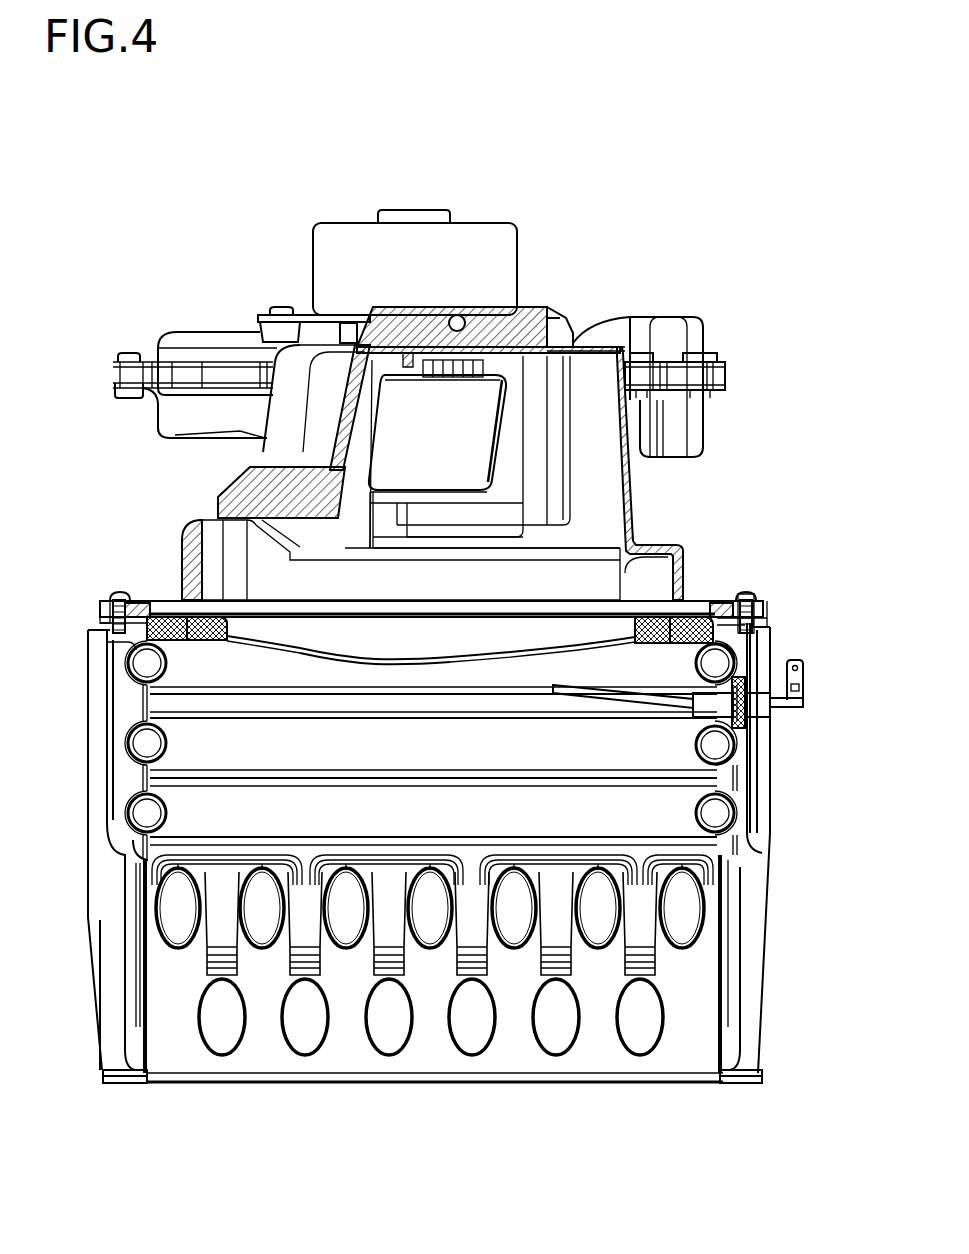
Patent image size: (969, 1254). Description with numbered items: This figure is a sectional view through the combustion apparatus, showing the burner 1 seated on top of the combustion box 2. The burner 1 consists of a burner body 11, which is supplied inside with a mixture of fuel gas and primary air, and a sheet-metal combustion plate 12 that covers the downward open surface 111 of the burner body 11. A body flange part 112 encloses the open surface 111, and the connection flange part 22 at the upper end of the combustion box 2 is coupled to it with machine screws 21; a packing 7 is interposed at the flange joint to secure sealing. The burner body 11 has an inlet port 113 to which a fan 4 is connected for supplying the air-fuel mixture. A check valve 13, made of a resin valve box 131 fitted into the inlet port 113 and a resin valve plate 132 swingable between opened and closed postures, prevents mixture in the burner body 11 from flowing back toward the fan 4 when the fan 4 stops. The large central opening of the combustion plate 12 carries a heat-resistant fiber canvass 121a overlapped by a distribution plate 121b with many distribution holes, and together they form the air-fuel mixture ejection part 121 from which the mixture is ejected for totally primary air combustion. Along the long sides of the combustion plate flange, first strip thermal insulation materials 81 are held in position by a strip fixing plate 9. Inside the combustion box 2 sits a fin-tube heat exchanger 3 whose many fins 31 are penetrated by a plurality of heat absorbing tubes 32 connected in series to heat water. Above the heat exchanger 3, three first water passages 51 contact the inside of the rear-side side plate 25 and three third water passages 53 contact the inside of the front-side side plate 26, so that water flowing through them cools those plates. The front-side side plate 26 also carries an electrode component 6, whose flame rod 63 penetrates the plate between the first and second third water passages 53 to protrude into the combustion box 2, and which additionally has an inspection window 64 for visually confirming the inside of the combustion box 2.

The burner 1 is at (455, 474).
The combustion box 2 is at (447, 850).
The heat exchanger 3 is at (432, 934).
The fan 4 is at (603, 322).
The first water passages 51 is at (168, 743).
The third water passages 53 is at (694, 745).
The electrode component 6 is at (781, 724).
The packing 7 is at (740, 605).
The first strip thermal insulation materials 81 is at (216, 643).
The fixing plate 9 is at (186, 643).
The burner body 11 is at (640, 540).
The combustion plate 12 is at (431, 734).
The check valve 13 is at (393, 463).
The machine screws 21 is at (118, 593).
The connection flange part 22 is at (140, 632).
The rear-side side plate 25 is at (122, 866).
The front-side side plate 26 is at (768, 838).
The fins 31 is at (540, 873).
The heat absorbing tubes 32 is at (333, 873).
The flame rod 63 is at (612, 692).
The inspection window 64 is at (750, 703).
The open surface 111 is at (401, 616).
The body flange part 112 is at (718, 600).
The inlet port 113 is at (503, 452).
The air-fuel mixture ejection part 121 is at (375, 740).
The canvass 121a is at (330, 661).
The distribution plate 121b is at (410, 651).
The valve box 131 is at (497, 483).
The valve plate 132 is at (453, 478).